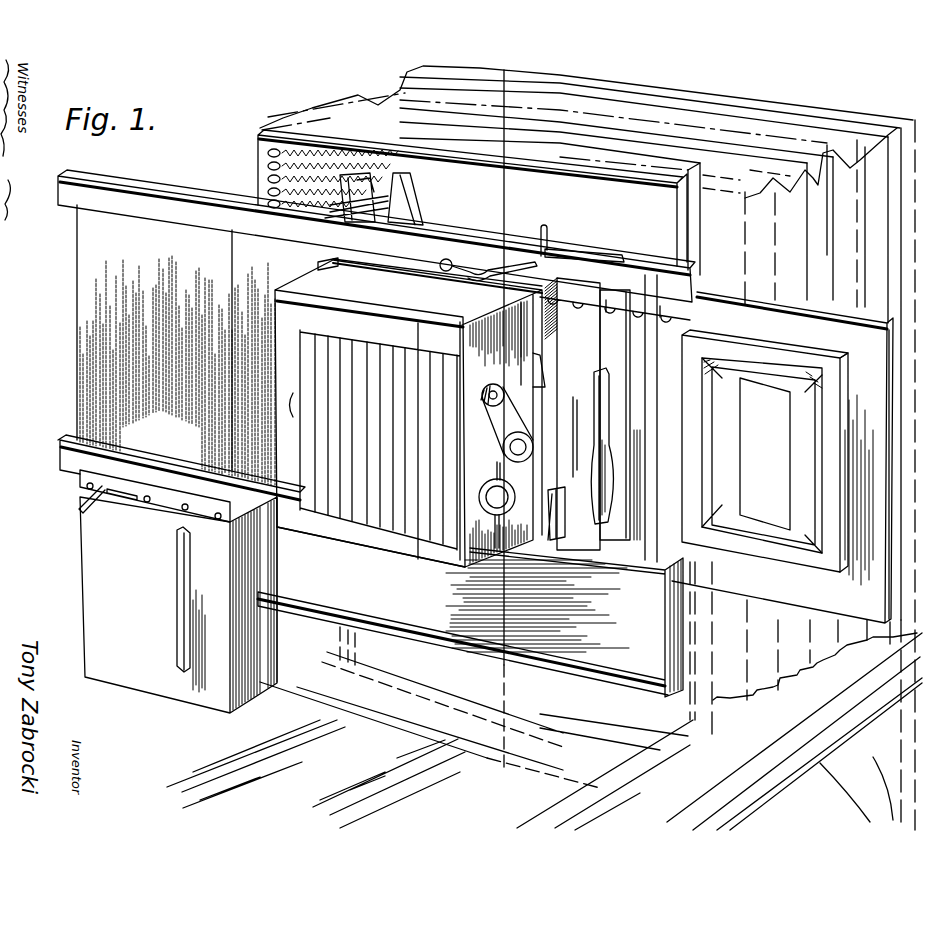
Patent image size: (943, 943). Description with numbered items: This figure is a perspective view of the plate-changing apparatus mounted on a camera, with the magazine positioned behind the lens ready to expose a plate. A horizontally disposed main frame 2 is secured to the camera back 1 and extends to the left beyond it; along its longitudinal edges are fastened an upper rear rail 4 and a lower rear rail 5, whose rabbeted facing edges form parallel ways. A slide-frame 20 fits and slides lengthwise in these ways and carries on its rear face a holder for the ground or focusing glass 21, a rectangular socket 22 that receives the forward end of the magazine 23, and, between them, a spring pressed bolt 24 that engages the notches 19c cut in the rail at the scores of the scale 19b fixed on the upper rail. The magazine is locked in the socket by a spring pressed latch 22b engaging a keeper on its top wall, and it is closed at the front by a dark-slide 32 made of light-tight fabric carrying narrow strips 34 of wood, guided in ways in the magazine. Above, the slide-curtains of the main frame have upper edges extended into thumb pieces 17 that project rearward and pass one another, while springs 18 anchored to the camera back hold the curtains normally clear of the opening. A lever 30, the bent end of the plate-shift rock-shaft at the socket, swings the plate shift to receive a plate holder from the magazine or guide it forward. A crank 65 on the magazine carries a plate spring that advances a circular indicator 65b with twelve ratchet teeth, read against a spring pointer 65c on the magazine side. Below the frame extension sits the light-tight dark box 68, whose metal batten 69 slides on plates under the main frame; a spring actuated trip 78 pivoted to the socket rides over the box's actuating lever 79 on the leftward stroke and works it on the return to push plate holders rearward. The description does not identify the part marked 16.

The camera back 1 is at (472, 198).
The main frame 2 is at (176, 345).
The upper rear rail 4 is at (478, 245).
The lower rear rail 5 is at (638, 588).
The handle 16 is at (545, 238).
The thumb piece 17 is at (374, 199).
The springs 18 is at (293, 162).
The scale 19b is at (668, 270).
The notches 19c is at (656, 298).
The slide-frame 20 is at (475, 396).
The ground or focusing glass 21 is at (765, 451).
The rectangular socket 22 is at (318, 263).
The spring pressed latch 22b is at (449, 258).
The magazine 23 is at (500, 282).
The spring pressed bolt 24 is at (615, 377).
The lever 30 is at (556, 506).
The dark-slide 32 is at (410, 413).
The narrow strips 34 is at (368, 510).
The crank 65 is at (505, 380).
The circular indicator 65b is at (502, 490).
The spring pointer 65c is at (507, 545).
The dark box 68 is at (178, 605).
The metal batten 69 is at (165, 485).
The spring actuated trip 78 is at (300, 542).
The actuating lever 79 is at (80, 511).